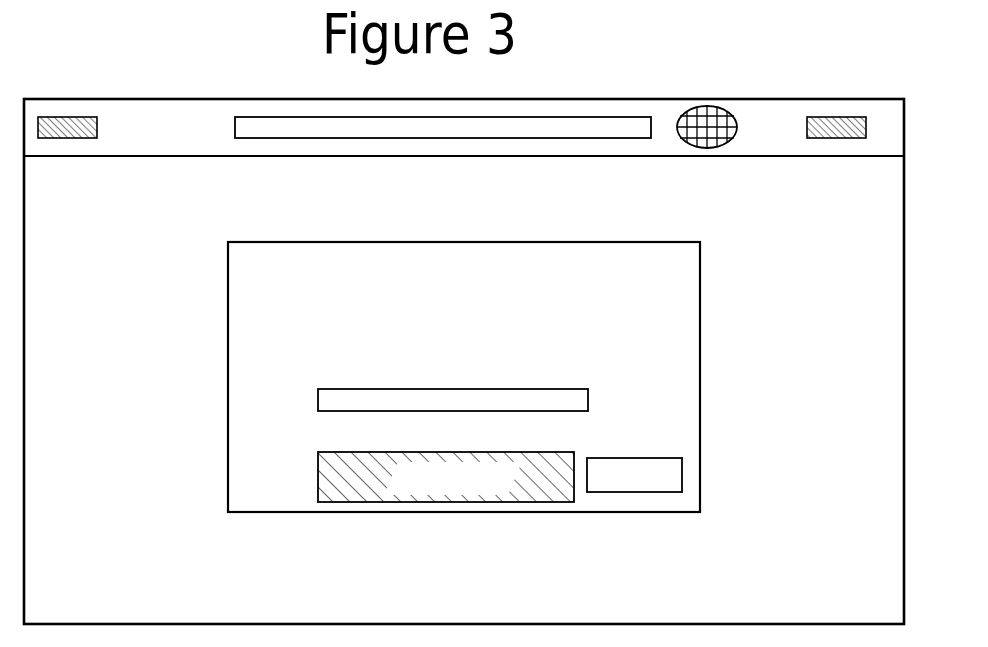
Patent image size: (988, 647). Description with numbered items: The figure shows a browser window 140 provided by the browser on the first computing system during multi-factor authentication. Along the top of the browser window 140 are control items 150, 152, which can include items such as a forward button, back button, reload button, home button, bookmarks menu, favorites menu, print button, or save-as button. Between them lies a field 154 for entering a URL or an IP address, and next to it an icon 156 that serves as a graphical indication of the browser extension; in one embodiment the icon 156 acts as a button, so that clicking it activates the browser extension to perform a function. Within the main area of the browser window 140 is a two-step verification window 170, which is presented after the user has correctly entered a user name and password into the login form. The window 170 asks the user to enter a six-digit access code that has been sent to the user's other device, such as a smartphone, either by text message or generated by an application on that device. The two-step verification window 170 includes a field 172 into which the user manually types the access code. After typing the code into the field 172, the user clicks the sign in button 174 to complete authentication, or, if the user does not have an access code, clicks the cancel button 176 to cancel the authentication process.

The browser window 140 is at (172, 99).
The control item 150 is at (79, 117).
The control item 152 is at (840, 117).
The field 154 is at (588, 115).
The icon 156 is at (723, 107).
The two-step verification window 170 is at (626, 240).
The field 172 is at (569, 388).
The sign in button 174 is at (412, 503).
The cancel button 176 is at (617, 493).